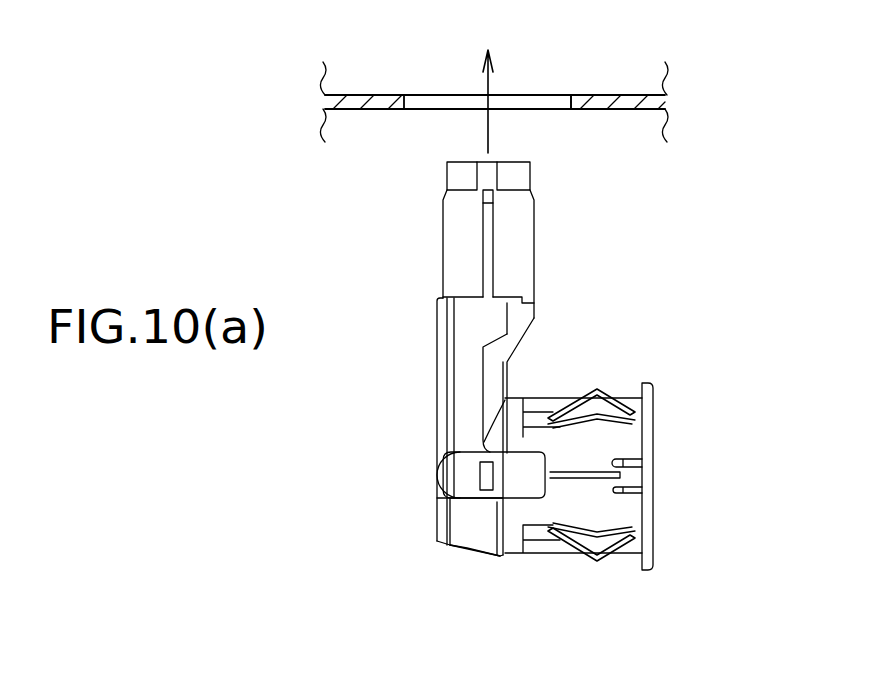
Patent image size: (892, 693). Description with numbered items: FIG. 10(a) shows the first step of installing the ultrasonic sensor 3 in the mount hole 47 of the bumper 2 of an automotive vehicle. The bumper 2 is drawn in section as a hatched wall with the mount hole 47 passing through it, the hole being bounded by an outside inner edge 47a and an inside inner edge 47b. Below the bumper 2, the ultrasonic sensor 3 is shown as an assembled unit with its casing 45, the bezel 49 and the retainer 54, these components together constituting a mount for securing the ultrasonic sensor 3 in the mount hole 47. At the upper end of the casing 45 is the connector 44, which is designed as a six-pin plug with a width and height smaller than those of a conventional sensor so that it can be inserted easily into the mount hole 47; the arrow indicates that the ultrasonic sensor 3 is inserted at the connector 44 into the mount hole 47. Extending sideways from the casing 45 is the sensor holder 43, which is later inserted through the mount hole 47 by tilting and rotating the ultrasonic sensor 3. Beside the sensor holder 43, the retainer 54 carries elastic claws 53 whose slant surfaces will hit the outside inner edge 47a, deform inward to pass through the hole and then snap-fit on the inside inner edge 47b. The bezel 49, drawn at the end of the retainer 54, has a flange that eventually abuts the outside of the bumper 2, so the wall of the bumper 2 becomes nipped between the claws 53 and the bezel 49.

The bumper 2 is at (609, 97).
The ultrasonic sensor 3 is at (382, 517).
The sensor holder 43 is at (470, 547).
The connector 44 is at (447, 172).
The casing 45 is at (422, 396).
The mount hole 47 is at (417, 94).
The outside inner edge 47a is at (571, 109).
The inside inner edge 47b is at (571, 95).
The bezel 49 is at (653, 422).
The claws 53 is at (597, 558).
The retainer 54 is at (572, 387).